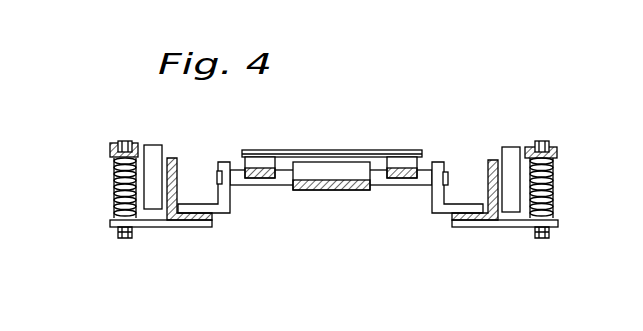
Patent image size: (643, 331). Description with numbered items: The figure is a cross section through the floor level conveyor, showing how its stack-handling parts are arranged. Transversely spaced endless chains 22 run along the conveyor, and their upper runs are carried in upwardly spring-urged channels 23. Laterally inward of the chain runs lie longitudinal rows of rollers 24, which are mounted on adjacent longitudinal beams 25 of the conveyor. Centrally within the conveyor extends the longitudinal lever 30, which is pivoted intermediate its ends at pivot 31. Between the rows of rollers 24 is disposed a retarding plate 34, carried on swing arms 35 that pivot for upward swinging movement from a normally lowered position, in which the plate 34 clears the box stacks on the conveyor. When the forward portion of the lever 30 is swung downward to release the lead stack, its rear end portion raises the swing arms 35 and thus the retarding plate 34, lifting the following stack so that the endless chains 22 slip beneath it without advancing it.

The endless chains 22 is at (124, 141).
The upwardly spring-urged channels 23 is at (110, 149).
The rollers 24 is at (154, 153).
The longitudinal beams 25 is at (176, 167).
The longitudinal lever 30 is at (327, 188).
The pivot 31 is at (424, 185).
The retarding plate 34 is at (326, 152).
The swing arms 35 is at (257, 173).